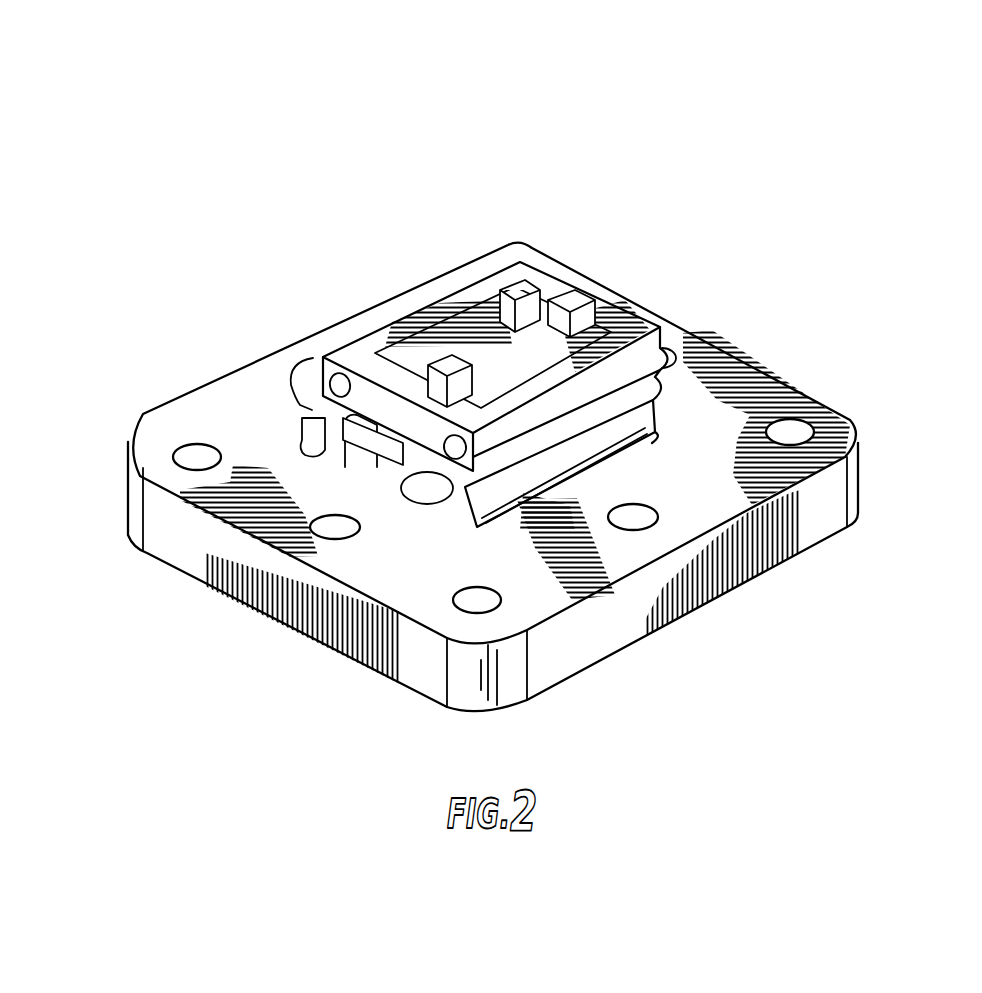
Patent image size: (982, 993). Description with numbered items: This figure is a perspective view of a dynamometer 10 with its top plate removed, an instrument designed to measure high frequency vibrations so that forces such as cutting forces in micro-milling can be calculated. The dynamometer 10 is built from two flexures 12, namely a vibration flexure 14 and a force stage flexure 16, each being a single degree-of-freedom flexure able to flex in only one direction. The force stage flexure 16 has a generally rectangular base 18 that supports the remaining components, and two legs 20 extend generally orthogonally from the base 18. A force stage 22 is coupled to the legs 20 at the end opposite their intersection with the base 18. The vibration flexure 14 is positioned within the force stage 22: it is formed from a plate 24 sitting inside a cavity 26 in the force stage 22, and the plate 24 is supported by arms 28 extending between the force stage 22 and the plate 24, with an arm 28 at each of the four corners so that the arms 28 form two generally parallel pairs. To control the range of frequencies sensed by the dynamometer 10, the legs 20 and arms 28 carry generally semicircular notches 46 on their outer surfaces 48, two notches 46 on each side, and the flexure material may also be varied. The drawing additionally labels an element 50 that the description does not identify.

The dynamometer 10 is at (463, 158).
The flexures 12 is at (462, 438).
The vibration flexure 14 is at (435, 311).
The force stage flexure 16 is at (317, 423).
The base 18 is at (753, 367).
The legs 20 is at (133, 612).
The force stage 22 is at (324, 356).
The plate 24 is at (483, 325).
The cavity 26 is at (506, 298).
The arms 28 is at (847, 592).
The notches 46 is at (797, 633).
The outer surfaces 48 is at (703, 675).
The rail 50 is at (657, 312).